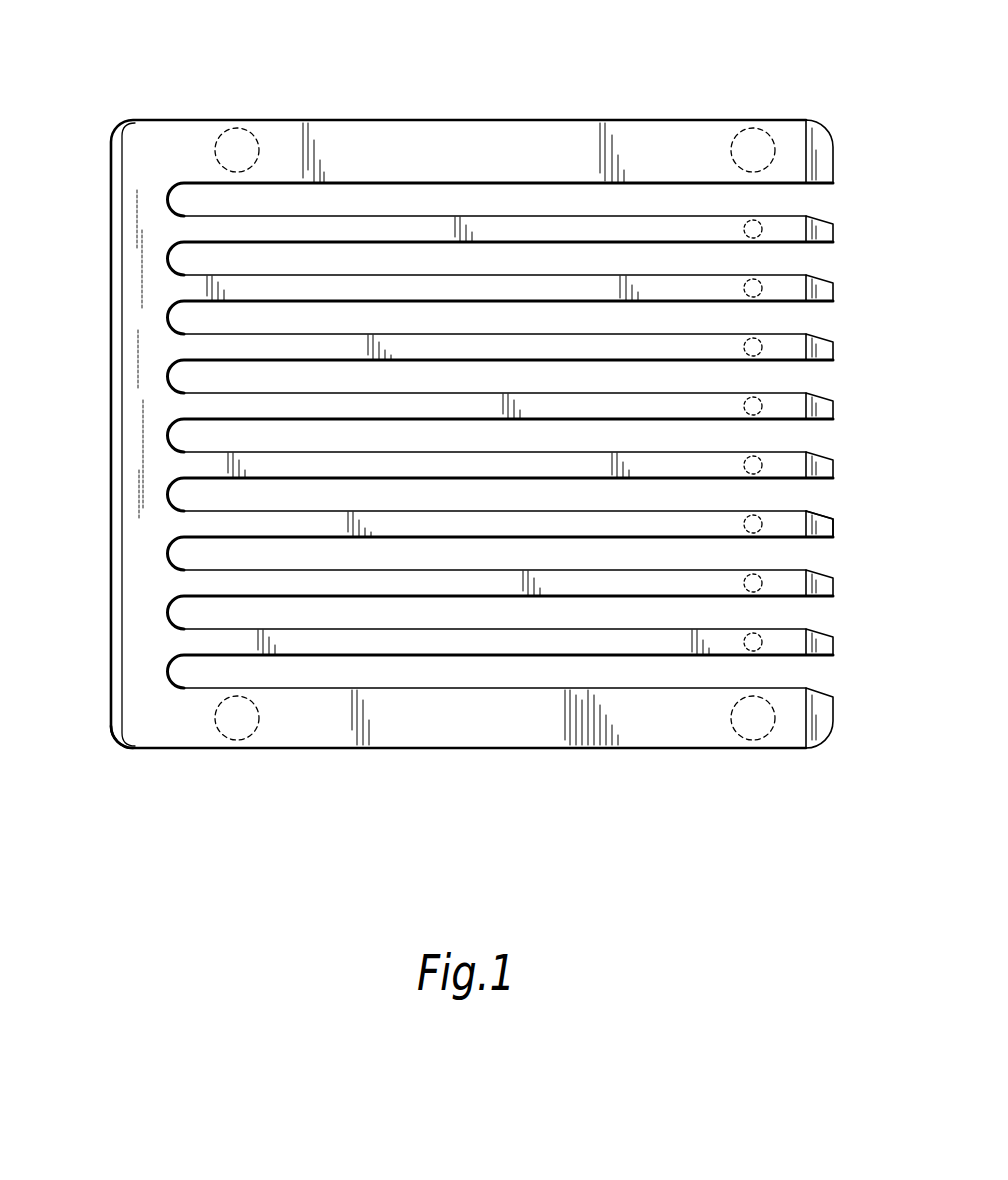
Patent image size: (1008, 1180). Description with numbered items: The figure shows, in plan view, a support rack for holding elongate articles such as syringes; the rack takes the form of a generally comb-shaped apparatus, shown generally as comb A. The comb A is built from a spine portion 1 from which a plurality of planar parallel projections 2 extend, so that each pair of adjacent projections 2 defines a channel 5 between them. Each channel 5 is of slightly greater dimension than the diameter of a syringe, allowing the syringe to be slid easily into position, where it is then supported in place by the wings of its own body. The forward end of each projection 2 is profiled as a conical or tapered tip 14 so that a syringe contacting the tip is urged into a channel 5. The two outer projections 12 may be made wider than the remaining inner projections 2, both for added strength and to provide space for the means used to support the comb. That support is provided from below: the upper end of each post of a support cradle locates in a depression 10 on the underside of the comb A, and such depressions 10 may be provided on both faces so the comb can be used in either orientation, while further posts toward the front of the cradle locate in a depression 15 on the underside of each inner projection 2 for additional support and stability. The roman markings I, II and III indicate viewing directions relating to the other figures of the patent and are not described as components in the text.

The spine portion 1 is at (111, 317).
The projections 2 is at (663, 648).
The channel 5 is at (790, 321).
The depression 10 is at (236, 147).
The outer projections 12 is at (606, 738).
The tapered tip 14 is at (826, 529).
The depression 15 is at (766, 226).
The comb A is at (106, 748).
The section line I is at (464, 778).
The section line II is at (856, 441).
The section line III is at (465, 88).